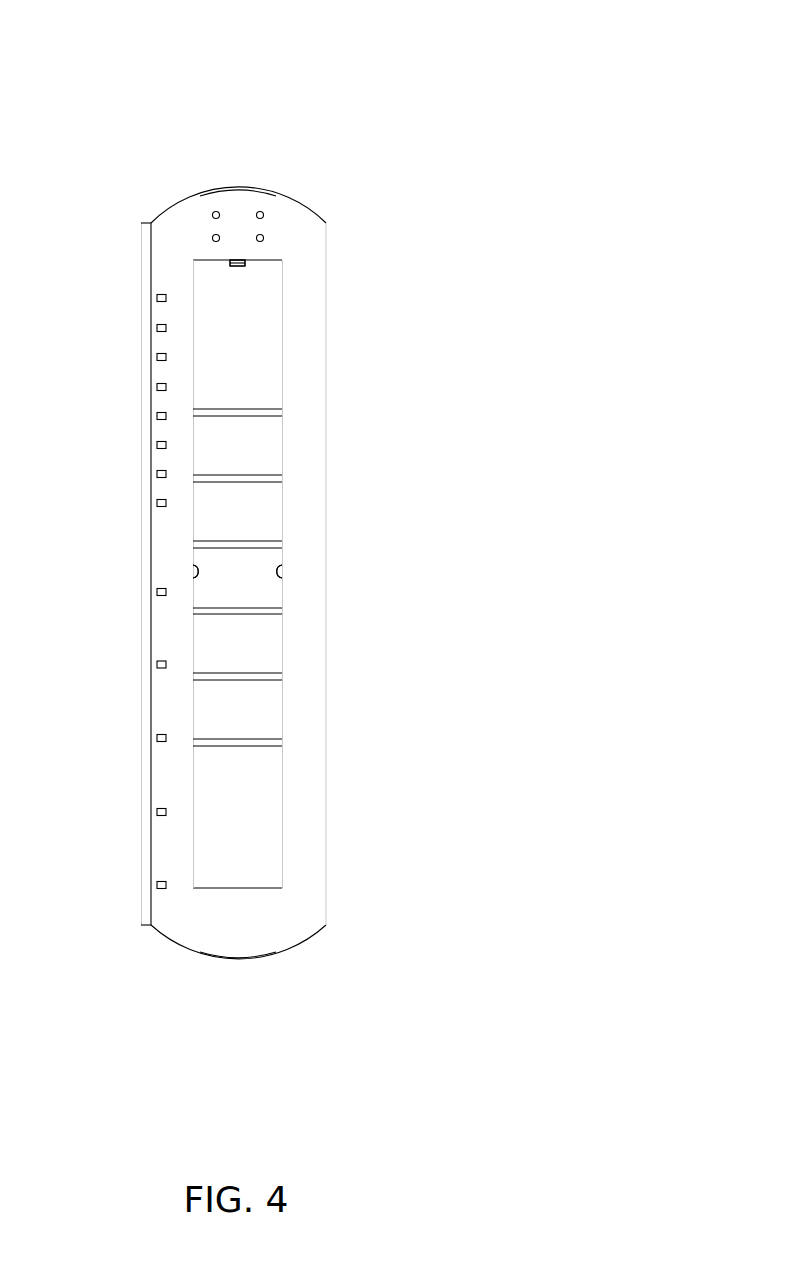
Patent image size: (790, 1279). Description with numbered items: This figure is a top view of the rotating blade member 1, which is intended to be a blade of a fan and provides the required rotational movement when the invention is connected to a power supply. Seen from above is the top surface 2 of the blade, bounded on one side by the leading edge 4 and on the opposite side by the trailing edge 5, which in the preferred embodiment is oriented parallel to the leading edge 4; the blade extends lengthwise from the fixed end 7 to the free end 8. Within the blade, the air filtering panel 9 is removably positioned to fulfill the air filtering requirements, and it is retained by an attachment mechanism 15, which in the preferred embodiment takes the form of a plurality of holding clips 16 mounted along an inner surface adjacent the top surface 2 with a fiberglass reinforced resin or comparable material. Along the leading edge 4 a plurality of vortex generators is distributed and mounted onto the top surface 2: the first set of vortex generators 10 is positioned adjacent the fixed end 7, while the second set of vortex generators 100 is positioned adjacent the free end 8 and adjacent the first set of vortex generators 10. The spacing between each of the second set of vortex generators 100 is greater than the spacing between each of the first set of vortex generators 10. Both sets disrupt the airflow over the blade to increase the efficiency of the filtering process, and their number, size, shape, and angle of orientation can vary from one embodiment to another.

The rotating blade member 1 is at (368, 80).
The top surface 2 is at (312, 300).
The leading edge 4 is at (145, 611).
The trailing edge 5 is at (326, 537).
The fixed end 7 is at (228, 188).
The free end 8 is at (238, 959).
The air filtering panel 9 is at (236, 821).
The first set of vortex generators 10 is at (160, 298).
The attachment mechanism 15 is at (228, 263).
The holding clips 16 is at (238, 265).
The second set of vortex generators 100 is at (160, 740).